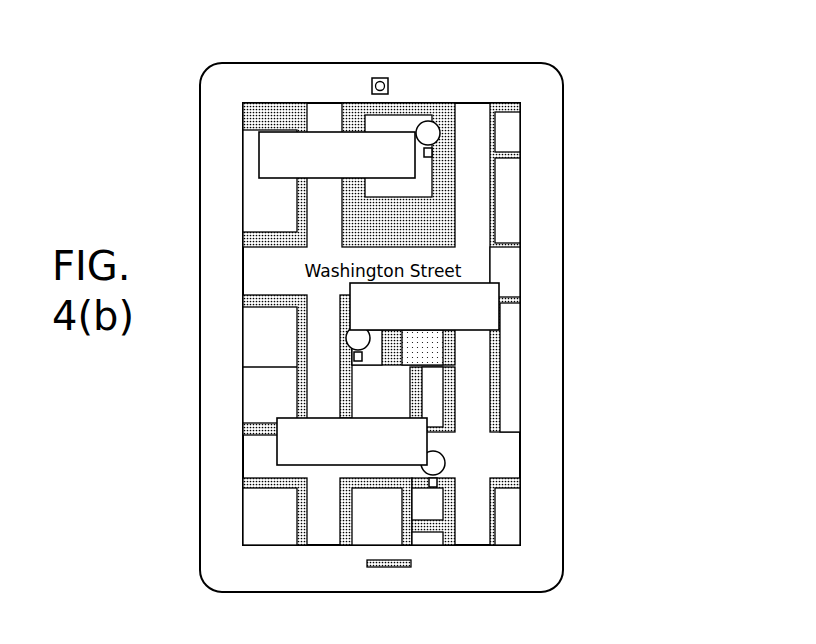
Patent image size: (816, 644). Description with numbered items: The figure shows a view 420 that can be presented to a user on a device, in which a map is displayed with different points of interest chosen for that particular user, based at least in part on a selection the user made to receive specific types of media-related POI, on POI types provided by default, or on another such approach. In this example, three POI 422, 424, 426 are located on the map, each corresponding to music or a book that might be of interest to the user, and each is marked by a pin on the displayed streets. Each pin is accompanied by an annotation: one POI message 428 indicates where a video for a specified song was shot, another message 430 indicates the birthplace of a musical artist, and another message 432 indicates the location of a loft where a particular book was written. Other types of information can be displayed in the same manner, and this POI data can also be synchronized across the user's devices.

The view 420 is at (682, 104).
The POI 422 is at (430, 119).
The POI 424 is at (445, 468).
The POI 426 is at (345, 338).
The POI message 428 is at (259, 155).
The message 430 is at (499, 314).
The message 432 is at (277, 447).